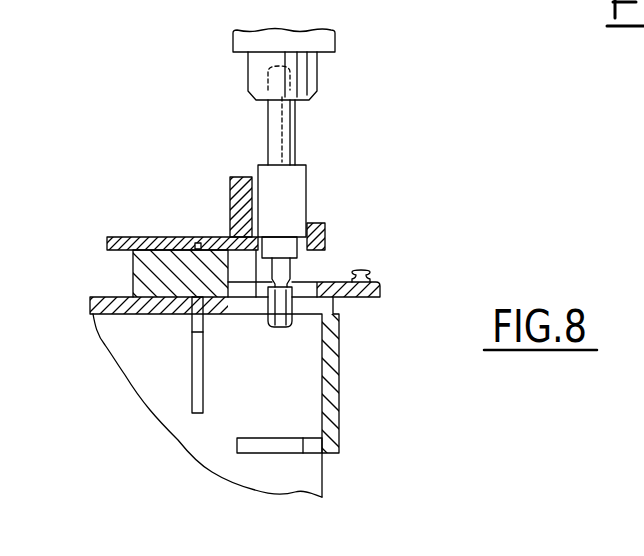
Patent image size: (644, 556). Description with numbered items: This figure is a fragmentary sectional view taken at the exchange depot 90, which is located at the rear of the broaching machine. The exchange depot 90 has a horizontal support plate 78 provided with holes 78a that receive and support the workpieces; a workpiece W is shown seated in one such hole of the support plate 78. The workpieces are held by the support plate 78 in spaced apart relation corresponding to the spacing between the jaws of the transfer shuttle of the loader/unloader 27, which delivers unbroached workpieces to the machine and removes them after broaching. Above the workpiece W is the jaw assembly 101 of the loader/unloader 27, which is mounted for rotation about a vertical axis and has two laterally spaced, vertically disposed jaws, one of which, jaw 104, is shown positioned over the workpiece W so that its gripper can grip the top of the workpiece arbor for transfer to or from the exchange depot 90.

The jaw assembly 101 is at (226, 34).
The jaw 104 is at (317, 82).
The workpiece W is at (307, 172).
The exchange depot 90 is at (163, 222).
The horizontal support plate 78 is at (117, 243).
The holes 78a is at (300, 261).
The loader/unloader 27 is at (104, 282).